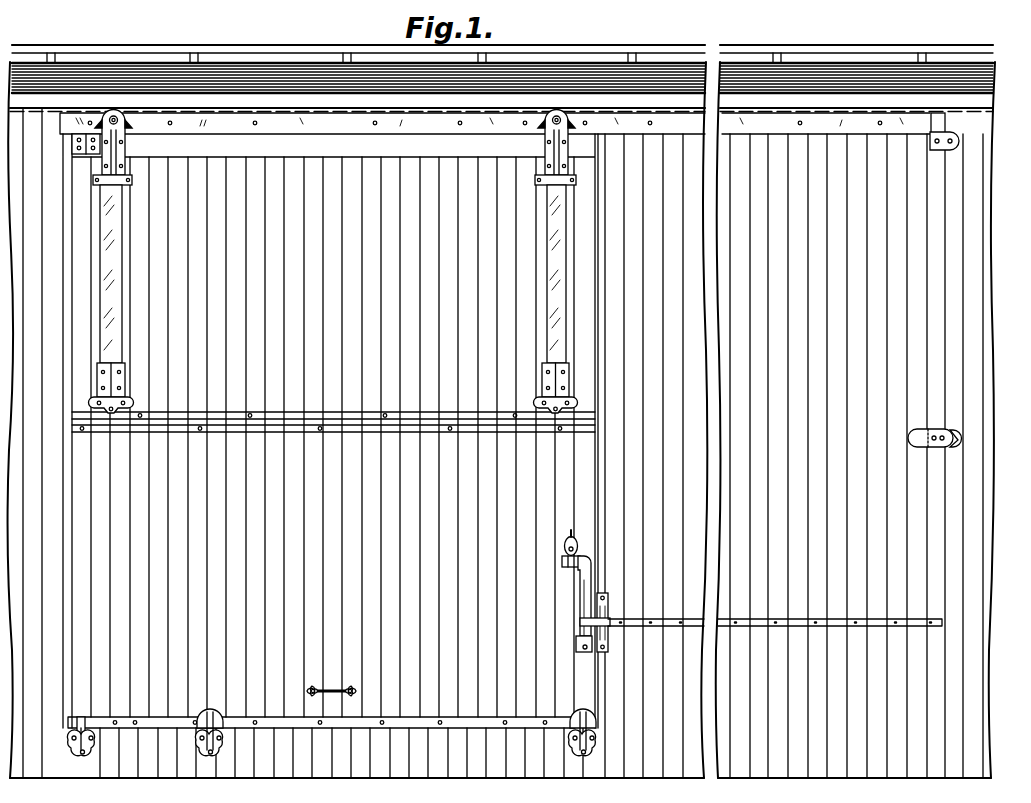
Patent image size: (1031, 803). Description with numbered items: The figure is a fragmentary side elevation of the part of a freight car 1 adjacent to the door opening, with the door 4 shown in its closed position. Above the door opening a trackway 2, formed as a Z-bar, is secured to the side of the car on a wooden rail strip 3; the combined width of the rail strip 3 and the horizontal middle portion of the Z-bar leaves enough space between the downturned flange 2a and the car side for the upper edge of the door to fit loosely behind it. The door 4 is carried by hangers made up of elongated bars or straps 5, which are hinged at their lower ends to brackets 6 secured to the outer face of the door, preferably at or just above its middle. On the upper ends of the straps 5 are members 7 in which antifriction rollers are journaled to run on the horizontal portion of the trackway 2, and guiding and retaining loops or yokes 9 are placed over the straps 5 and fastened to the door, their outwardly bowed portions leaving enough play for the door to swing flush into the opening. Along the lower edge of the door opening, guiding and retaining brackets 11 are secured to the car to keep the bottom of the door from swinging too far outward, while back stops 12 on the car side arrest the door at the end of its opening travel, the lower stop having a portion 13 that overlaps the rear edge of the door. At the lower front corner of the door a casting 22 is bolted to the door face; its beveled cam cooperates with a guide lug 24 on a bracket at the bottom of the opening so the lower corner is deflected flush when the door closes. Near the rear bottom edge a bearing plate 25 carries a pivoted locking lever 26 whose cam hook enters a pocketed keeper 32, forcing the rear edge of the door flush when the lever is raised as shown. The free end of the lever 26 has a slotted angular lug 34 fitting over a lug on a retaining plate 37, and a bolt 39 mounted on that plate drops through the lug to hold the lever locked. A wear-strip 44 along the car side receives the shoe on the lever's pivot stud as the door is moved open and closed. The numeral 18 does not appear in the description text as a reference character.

The freight car 1 is at (950, 358).
The trackway 2 is at (352, 118).
The downturned flange 2a is at (242, 131).
The rail strip 3 is at (466, 115).
The door 4 is at (330, 431).
The hanger bars or straps 5 is at (112, 285).
The brackets 6 is at (126, 395).
The hanger members 7 is at (120, 136).
The guiding and retaining loops or yokes 9 is at (117, 183).
The guiding and retaining brackets 11 is at (216, 720).
The back stops 12 is at (948, 140).
The overlapping portion 13 is at (916, 441).
The stop bracket 18 is at (86, 152).
The casting or plate member 22 is at (110, 716).
The guide lug 24 is at (76, 745).
The bracket or bearing plate 25 is at (580, 650).
The locking lever 26 is at (590, 585).
The keeper 32 is at (608, 606).
The angular extension or lug 34 is at (563, 563).
The retaining plate 37 is at (566, 549).
The bolt 39 is at (578, 545).
The wear-strip 44 is at (808, 618).